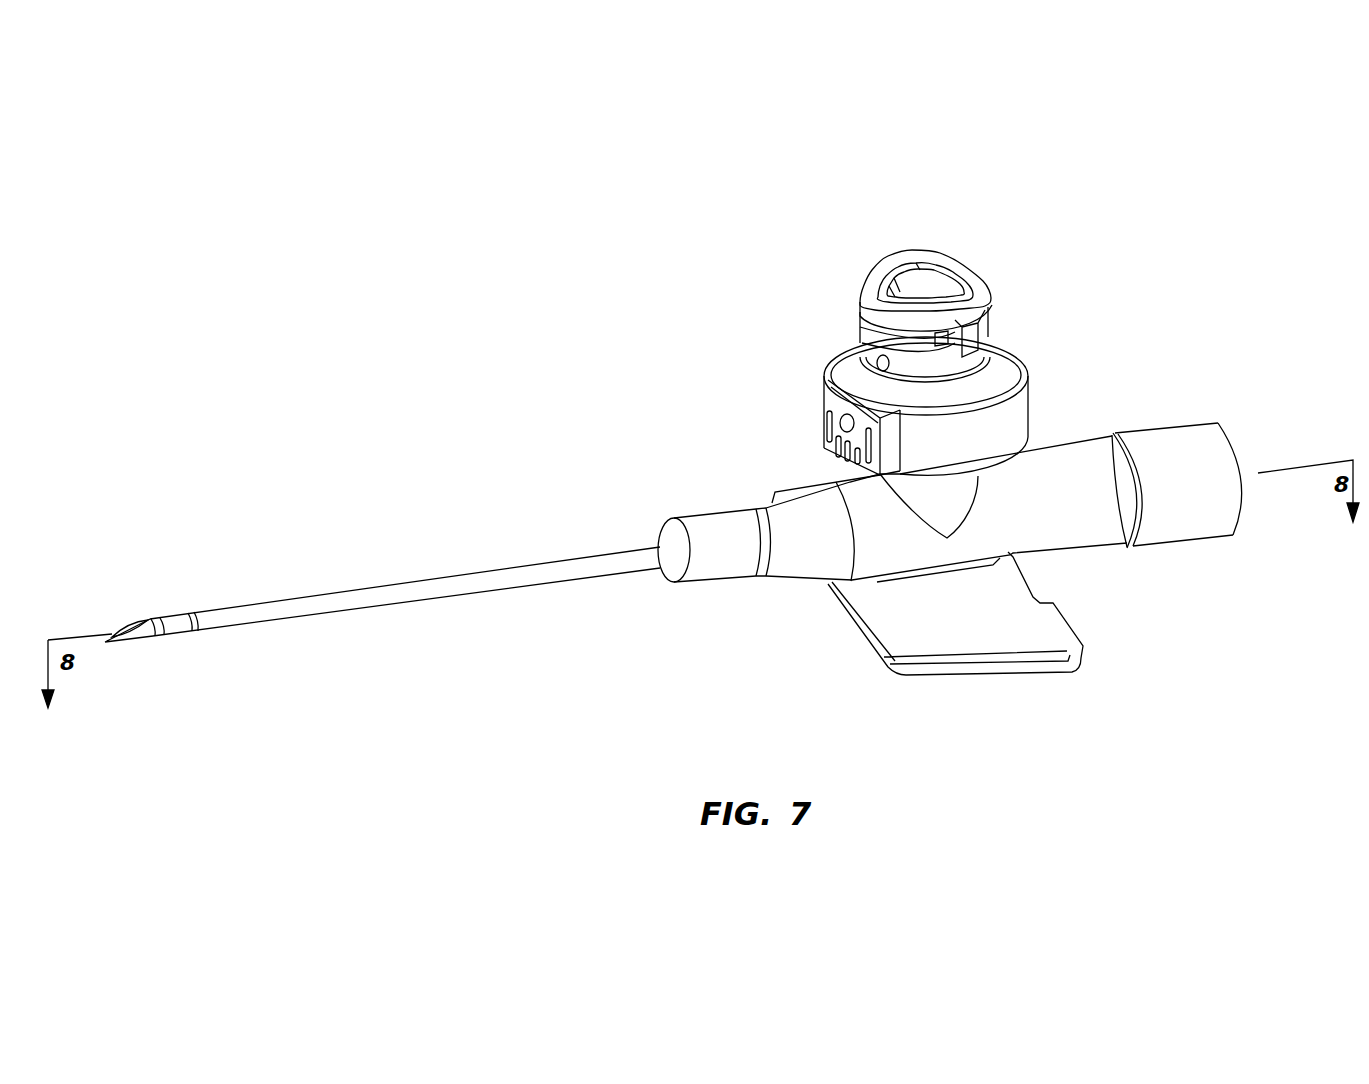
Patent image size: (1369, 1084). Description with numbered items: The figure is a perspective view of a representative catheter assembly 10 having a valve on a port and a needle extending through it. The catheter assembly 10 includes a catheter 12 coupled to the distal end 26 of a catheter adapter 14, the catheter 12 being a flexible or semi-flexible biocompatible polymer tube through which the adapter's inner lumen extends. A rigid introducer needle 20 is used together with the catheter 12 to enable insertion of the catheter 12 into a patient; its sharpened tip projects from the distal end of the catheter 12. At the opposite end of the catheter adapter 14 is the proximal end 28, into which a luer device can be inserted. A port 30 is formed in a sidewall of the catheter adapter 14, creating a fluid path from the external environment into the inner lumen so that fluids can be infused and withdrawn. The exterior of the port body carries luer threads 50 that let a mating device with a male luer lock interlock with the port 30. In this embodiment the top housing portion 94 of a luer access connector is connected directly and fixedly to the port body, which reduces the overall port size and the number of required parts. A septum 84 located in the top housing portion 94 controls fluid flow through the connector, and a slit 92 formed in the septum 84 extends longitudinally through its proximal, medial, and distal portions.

The catheter assembly 10 is at (595, 383).
The catheter 12 is at (452, 577).
The catheter adapter 14 is at (808, 567).
The introducer needle 20 is at (146, 618).
The distal end 26 is at (667, 527).
The proximal end 28 is at (1218, 423).
The port 30 is at (1020, 298).
The luer threads 50 is at (865, 332).
The septum 84 is at (870, 292).
The slit 92 is at (898, 295).
The top housing portion 94 is at (1016, 404).